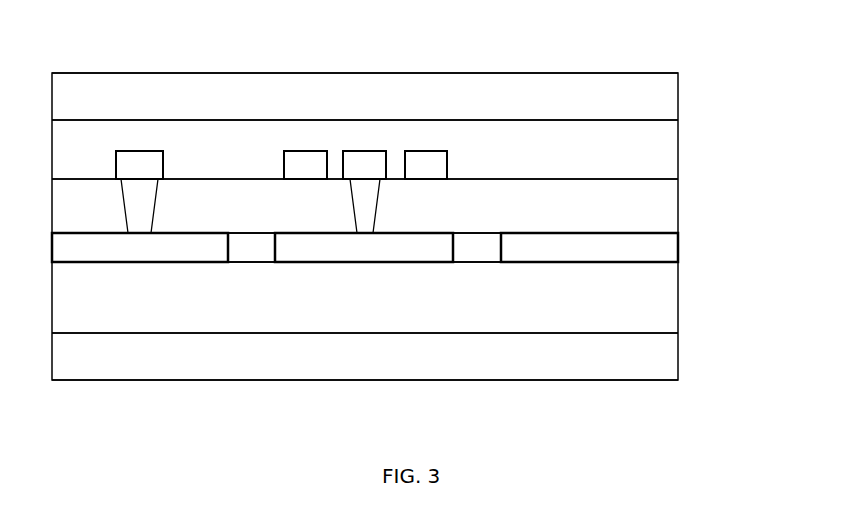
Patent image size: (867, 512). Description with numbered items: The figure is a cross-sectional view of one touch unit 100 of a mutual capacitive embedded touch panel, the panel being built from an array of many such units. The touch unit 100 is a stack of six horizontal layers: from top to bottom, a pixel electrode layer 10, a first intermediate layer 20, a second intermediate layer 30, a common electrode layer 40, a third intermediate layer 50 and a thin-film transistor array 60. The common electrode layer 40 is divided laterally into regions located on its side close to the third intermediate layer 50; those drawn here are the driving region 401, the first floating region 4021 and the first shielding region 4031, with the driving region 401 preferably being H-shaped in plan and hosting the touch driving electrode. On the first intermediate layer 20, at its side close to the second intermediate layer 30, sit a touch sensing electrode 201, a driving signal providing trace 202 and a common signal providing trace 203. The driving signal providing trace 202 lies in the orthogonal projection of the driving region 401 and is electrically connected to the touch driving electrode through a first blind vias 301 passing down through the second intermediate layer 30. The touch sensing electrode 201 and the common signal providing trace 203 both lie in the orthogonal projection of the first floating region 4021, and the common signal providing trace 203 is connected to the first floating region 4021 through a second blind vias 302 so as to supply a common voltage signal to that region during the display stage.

The touch unit 100 is at (365, 254).
The pixel electrode layer 10 is at (680, 97).
The first intermediate layer 20 is at (680, 150).
The touch sensing electrode 201 is at (428, 160).
The driving signal providing trace 202 is at (140, 163).
The common signal providing trace 203 is at (364, 162).
The second intermediate layer 30 is at (680, 210).
The first blind vias 301 is at (140, 207).
The second blind vias 302 is at (363, 207).
The common electrode layer 40 is at (680, 250).
The driving region 401 is at (365, 247).
The first floating region 4021 is at (364, 247).
The first shielding region 4031 is at (477, 250).
The third intermediate layer 50 is at (680, 297).
The thin-film transistor array 60 is at (680, 357).